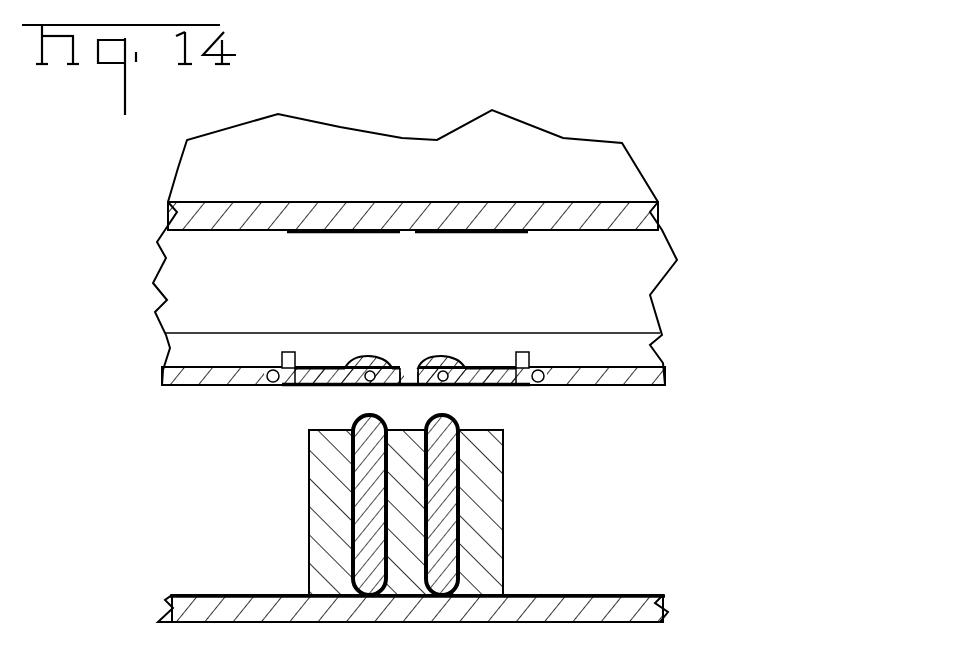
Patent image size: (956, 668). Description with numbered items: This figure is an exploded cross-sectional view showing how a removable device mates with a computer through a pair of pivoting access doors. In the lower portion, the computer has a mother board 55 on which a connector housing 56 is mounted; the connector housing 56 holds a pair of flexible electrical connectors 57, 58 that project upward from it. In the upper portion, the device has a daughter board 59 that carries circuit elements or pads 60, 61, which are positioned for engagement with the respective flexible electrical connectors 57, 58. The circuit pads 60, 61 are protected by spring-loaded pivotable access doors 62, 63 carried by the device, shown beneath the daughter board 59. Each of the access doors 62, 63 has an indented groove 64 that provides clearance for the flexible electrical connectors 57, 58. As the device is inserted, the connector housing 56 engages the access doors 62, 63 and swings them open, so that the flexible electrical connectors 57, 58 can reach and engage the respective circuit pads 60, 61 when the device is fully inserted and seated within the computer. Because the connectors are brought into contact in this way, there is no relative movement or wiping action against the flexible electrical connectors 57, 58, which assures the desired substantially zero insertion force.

The mother board 55 is at (642, 603).
The connector housing 56 is at (497, 561).
The flexible electrical connector 57 is at (368, 524).
The flexible electrical connector 58 is at (443, 500).
The daughter board 59 is at (595, 207).
The circuit pad 60 is at (320, 233).
The circuit pad 61 is at (501, 233).
The access door 62 is at (326, 372).
The access door 63 is at (485, 372).
The indented groove 64 is at (374, 358).